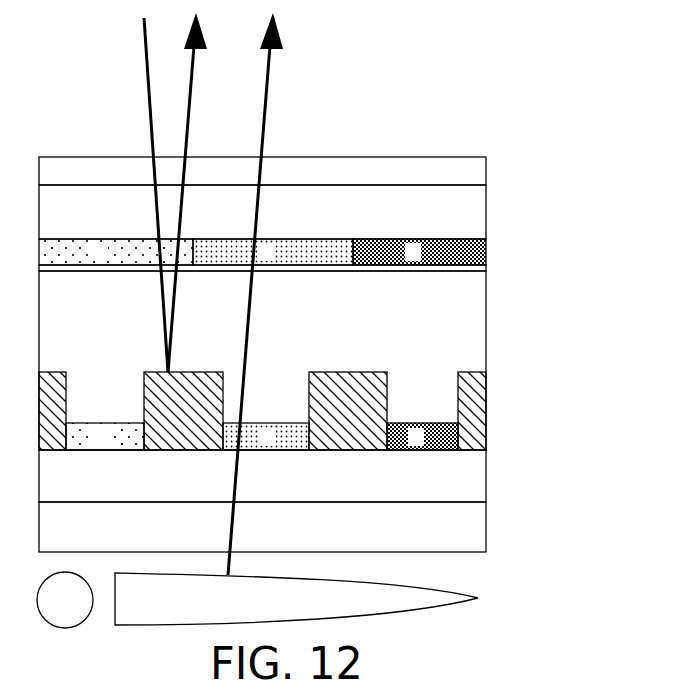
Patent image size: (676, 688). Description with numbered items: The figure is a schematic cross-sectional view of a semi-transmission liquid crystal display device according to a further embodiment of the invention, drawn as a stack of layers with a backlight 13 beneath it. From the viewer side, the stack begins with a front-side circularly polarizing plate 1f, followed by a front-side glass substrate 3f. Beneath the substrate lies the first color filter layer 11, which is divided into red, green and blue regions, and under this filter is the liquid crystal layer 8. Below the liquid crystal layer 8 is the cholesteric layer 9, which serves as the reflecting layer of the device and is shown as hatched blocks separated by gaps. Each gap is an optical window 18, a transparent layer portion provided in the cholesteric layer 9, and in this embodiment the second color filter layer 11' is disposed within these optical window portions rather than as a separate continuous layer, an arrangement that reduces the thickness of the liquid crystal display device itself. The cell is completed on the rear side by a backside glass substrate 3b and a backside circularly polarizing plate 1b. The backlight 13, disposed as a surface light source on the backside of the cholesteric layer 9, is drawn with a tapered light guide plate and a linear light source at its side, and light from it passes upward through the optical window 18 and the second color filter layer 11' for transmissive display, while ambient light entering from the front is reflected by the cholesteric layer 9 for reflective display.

The front-side circularly polarizing plate 1f is at (477, 165).
The front-side glass substrate 3f is at (477, 204).
The first color filter layer 11 is at (296, 247).
The liquid crystal layer 8 is at (477, 292).
The optical window 18 is at (440, 371).
The cholesteric layer 9 is at (477, 388).
The second color filter layer 11' is at (315, 438).
The backside glass substrate 3b is at (477, 490).
The backside circularly polarizing plate 1b is at (477, 540).
The backlight 13 is at (478, 598).